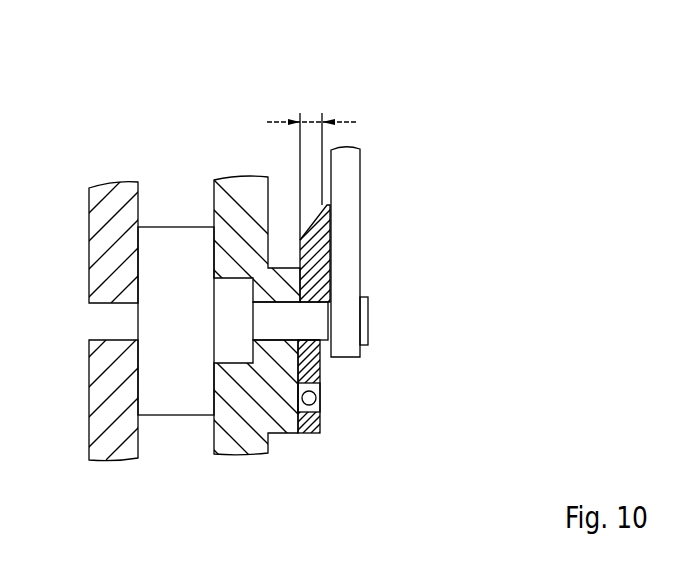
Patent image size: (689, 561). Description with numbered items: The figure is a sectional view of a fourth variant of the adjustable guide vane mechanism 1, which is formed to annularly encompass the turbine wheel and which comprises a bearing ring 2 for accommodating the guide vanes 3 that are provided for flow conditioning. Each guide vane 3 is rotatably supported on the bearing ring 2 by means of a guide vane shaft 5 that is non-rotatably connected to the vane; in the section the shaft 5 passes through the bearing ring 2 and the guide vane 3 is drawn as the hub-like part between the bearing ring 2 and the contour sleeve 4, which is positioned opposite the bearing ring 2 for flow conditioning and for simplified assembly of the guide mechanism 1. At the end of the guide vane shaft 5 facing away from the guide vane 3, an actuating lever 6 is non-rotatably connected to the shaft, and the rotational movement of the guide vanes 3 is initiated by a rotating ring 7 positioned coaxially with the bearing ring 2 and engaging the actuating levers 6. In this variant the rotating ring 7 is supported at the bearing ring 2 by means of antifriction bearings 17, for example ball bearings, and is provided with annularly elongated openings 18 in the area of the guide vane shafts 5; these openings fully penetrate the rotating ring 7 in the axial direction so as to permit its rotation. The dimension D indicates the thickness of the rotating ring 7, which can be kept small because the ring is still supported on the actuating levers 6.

The guide mechanism 1 is at (492, 281).
The bearing ring 2 is at (248, 432).
The guide vane 3 is at (172, 330).
The contour sleeve 4 is at (92, 254).
The guide vane shaft 5 is at (320, 322).
The actuating lever 6 is at (355, 220).
The rotating ring 7 is at (318, 211).
The antifriction bearing 17 is at (318, 398).
The annularly elongated opening 18 is at (307, 343).
The thickness D is at (312, 122).